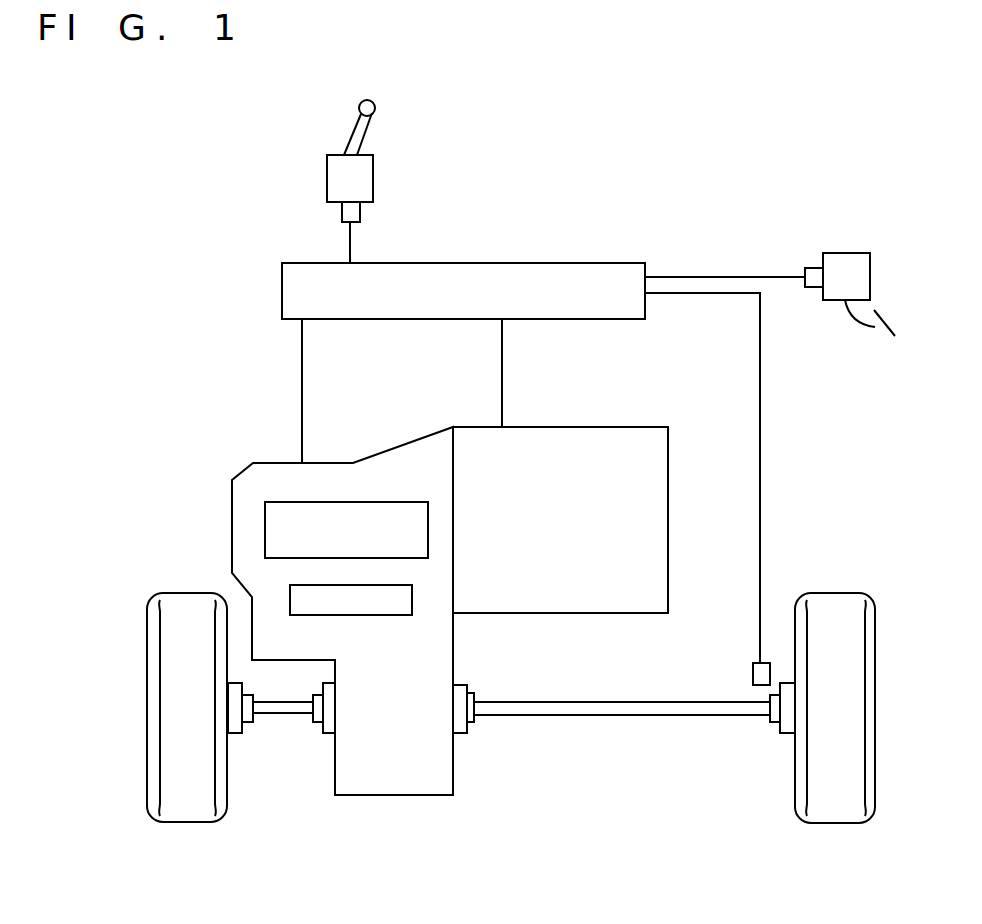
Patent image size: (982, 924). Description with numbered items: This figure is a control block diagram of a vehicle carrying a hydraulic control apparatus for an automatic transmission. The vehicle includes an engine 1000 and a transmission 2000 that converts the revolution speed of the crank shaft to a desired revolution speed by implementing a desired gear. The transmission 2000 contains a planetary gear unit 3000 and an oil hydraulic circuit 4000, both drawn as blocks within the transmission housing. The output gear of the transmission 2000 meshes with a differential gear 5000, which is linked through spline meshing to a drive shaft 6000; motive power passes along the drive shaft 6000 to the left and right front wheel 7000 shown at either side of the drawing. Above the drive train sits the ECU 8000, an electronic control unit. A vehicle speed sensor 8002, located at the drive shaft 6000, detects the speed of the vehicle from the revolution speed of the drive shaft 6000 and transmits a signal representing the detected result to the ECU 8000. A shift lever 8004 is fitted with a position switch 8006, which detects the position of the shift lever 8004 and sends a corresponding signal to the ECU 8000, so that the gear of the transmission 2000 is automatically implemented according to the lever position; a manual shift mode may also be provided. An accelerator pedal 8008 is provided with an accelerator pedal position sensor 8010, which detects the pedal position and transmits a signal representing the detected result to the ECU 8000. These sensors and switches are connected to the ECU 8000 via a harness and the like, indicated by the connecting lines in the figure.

The engine 1000 is at (578, 424).
The transmission 2000 is at (326, 463).
The planetary gear unit 3000 is at (353, 502).
The oil hydraulic circuit 4000 is at (380, 615).
The differential gear 5000 is at (392, 797).
The drive shaft 6000 is at (285, 718).
The front wheel 7000 is at (182, 593).
The ECU 8000 is at (538, 263).
The vehicle speed sensor 8002 is at (753, 670).
The shift lever 8004 is at (375, 104).
The position switch 8006 is at (342, 213).
The accelerator pedal 8008 is at (877, 330).
The accelerator pedal position sensor 8010 is at (815, 262).